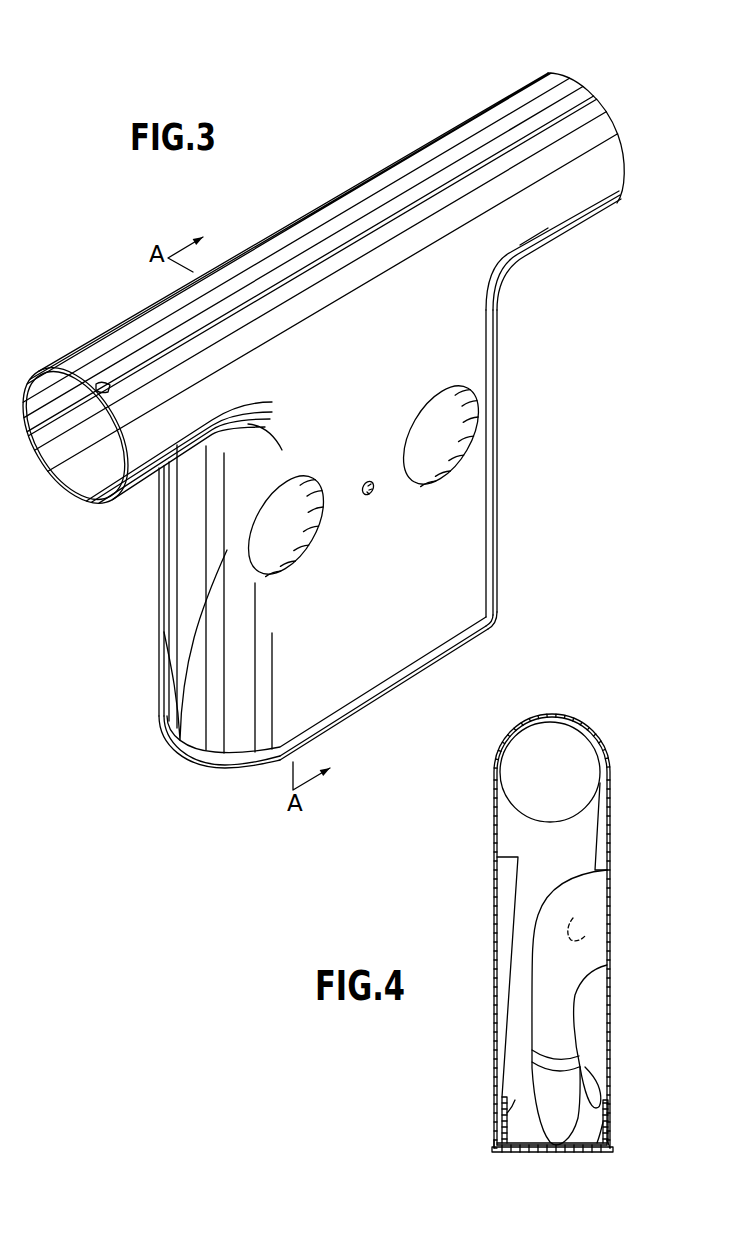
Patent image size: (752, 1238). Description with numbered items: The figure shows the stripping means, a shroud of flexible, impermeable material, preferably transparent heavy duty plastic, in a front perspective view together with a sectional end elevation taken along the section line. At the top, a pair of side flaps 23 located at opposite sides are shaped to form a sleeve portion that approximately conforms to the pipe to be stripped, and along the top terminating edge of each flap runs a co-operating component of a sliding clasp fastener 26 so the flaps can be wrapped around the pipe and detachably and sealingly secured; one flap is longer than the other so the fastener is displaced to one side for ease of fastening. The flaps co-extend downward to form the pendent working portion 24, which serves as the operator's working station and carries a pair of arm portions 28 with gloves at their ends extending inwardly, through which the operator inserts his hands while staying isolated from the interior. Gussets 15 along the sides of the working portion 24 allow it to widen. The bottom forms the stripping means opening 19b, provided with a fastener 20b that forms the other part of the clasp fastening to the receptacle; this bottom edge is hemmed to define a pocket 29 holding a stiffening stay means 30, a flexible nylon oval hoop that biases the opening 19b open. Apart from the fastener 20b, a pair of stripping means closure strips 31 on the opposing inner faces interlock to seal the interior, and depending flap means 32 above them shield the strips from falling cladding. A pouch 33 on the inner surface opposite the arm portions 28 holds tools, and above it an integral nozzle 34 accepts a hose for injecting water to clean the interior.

In FIG. 3, the gussets 15 is at (177, 572).
In FIG. 3, the stripping means opening 19b is at (195, 767).
In FIG. 4, the stripping means opening 19b is at (522, 1127).
In FIG. 3, the fastener 20b is at (492, 632).
In FIG. 4, the fastener 20b is at (612, 1152).
In FIG. 3, the side flaps 23 is at (405, 258).
In FIG. 3, the pendent working portion 24 is at (358, 603).
In FIG. 4, the pendent working portion 24 is at (612, 1031).
In FIG. 3, the sliding clasp fastener 26 is at (133, 362).
In FIG. 3, the arm portions 28 is at (432, 393).
In FIG. 4, the arm portions 28 is at (570, 985).
In FIG. 3, the pocket 29 is at (387, 683).
In FIG. 4, the pocket 29 is at (532, 1152).
In FIG. 4, the stiffening stay means 30 is at (612, 1147).
In FIG. 4, the stripping means closure strips 31 is at (500, 1115).
In FIG. 4, the depending flap means 32 is at (506, 1114).
In FIG. 4, the pouch 33 is at (510, 893).
In FIG. 3, the nozzle 34 is at (368, 480).
In FIG. 4, the nozzle 34 is at (586, 908).